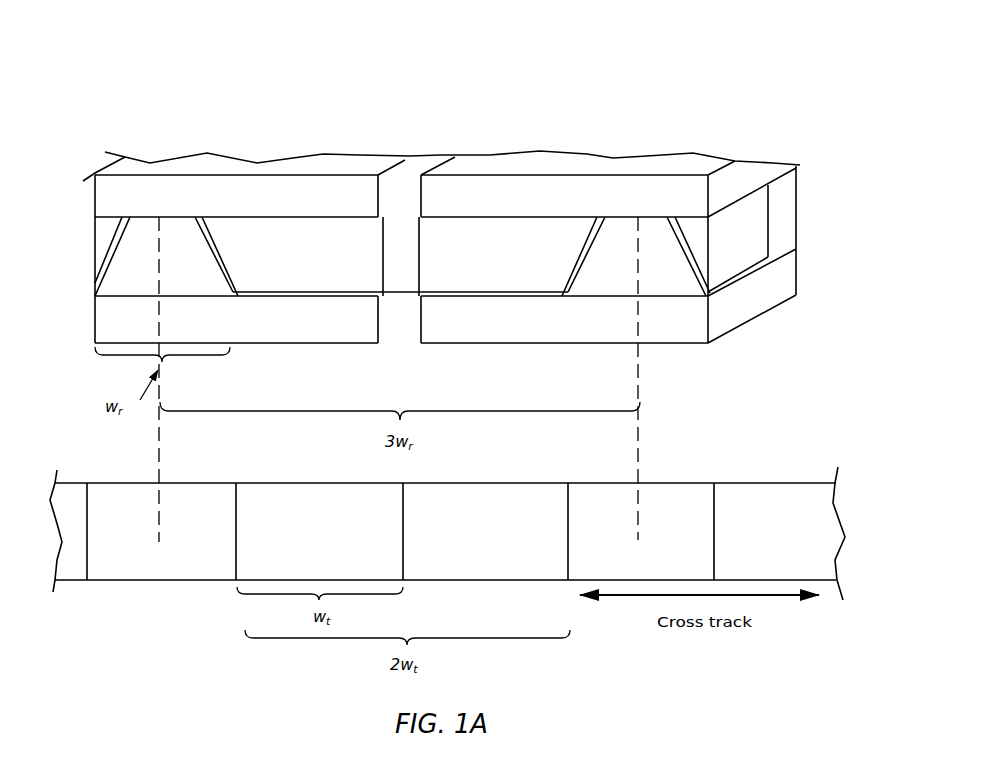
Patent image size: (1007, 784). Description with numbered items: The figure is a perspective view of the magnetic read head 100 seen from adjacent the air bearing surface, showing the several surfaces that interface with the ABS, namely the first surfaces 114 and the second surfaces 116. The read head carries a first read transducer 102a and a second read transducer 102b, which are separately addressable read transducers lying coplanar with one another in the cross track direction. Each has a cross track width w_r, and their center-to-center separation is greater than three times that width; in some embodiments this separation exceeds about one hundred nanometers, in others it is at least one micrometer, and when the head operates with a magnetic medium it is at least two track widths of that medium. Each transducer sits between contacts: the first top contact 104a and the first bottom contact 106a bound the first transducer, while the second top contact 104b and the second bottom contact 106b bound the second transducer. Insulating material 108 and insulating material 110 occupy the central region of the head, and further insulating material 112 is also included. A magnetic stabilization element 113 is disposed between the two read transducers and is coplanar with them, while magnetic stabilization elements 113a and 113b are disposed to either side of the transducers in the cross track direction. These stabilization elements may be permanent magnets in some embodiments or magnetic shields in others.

The magnetic read head 100 is at (268, 73).
The first read transducer 102a is at (160, 218).
The second read transducer 102b is at (647, 216).
The first top contact 104a is at (213, 193).
The second top contact 104b is at (598, 195).
The first bottom contact 106a is at (247, 335).
The second bottom contact 106b is at (678, 330).
The insulating material 108 is at (405, 190).
The insulating material 110 is at (398, 333).
The insulating material 112 is at (527, 297).
The magnetic stabilization element 113 is at (358, 240).
The magnetic stabilization element 113a is at (102, 247).
The magnetic stabilization element 113b is at (727, 243).
The first surface 114 is at (166, 233).
The second surface 116 is at (613, 298).